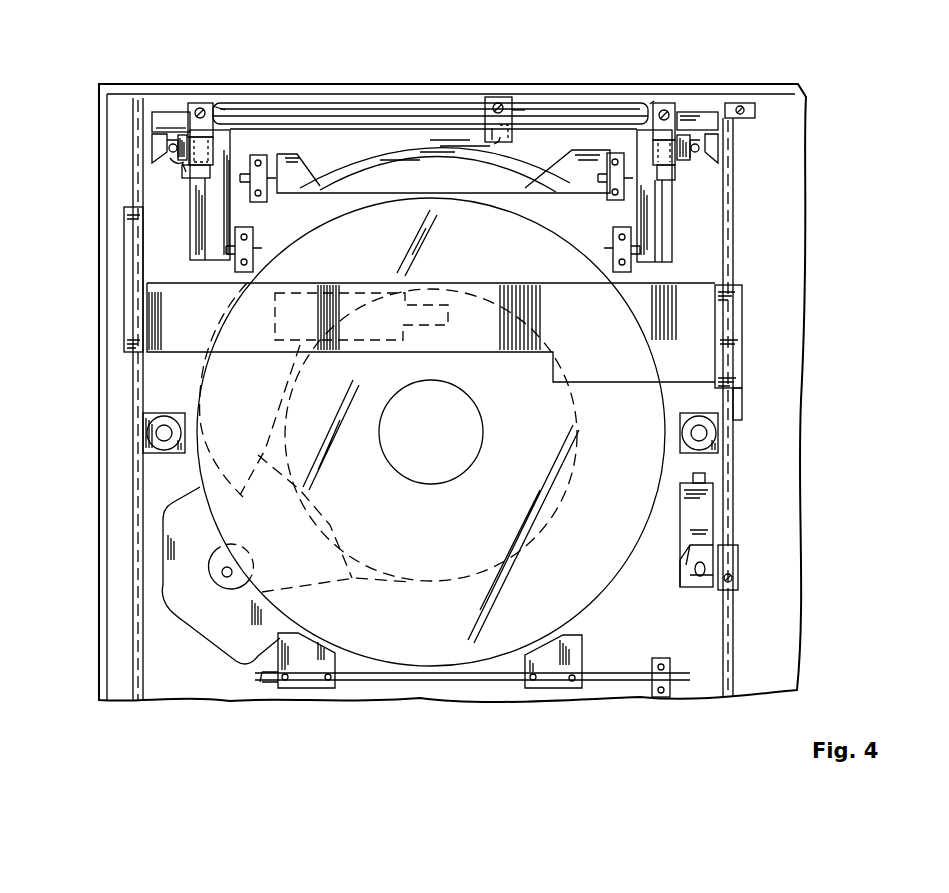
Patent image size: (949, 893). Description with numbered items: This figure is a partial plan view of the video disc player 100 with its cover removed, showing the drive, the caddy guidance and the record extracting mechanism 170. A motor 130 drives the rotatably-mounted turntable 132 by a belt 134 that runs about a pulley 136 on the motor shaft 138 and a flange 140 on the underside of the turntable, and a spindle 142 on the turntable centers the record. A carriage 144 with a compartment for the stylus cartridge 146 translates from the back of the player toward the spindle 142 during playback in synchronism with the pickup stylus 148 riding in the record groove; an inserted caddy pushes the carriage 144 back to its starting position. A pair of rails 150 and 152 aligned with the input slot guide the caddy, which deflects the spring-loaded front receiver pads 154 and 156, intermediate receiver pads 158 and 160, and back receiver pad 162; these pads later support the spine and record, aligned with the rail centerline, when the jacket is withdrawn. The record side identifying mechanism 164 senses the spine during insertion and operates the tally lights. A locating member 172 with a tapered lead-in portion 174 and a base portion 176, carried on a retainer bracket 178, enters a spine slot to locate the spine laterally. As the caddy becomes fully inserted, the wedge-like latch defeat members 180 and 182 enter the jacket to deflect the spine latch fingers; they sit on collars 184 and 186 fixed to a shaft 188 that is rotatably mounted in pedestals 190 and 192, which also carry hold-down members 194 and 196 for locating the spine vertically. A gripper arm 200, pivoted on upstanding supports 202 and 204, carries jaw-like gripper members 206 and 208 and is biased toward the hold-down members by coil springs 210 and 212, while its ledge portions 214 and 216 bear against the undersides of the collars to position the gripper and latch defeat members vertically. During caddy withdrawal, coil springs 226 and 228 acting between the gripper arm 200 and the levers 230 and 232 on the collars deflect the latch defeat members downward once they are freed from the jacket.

The video disc player 100 is at (66, 399).
The motor 130 is at (245, 648).
The turntable 132 is at (602, 594).
The belt 134 is at (411, 580).
The pulley 136 is at (233, 587).
The motor shaft 138 is at (231, 573).
The flange 140 is at (537, 530).
The spindle 142 is at (484, 431).
The carriage 144 is at (556, 283).
The stylus cartridge 146 is at (431, 317).
The pickup stylus 148 is at (450, 324).
The rail 150 is at (133, 628).
The rail 152 is at (729, 661).
The front receiver pad 154 is at (332, 659).
The front receiver pad 156 is at (553, 649).
The intermediate receiver pad 158 is at (165, 430).
The intermediate receiver pad 160 is at (696, 433).
The back receiver pad 162 is at (507, 181).
The record side identifying mechanism 164 is at (706, 517).
The record extracting mechanism 170 is at (126, 72).
The locating member 172 is at (522, 114).
The tapered lead-in portion 174 is at (498, 135).
The base portion 176 is at (491, 104).
The retainer bracket 178 is at (505, 135).
The latch defeat member 180 is at (152, 150).
The latch defeat member 182 is at (716, 152).
The collar 184 is at (172, 117).
The collar 186 is at (716, 112).
The shaft 188 is at (318, 110).
The pedestal 190 is at (203, 102).
The pedestal 192 is at (672, 104).
The hold-down member 194 is at (214, 150).
The hold-down member 196 is at (656, 133).
The gripper arm 200 is at (193, 233).
The upstanding support 202 is at (252, 228).
The upstanding support 204 is at (619, 228).
The gripper member 206 is at (207, 175).
The gripper member 208 is at (667, 172).
The coil spring 210 is at (214, 106).
The coil spring 212 is at (655, 101).
The ledge portion 214 is at (184, 168).
The ledge portion 216 is at (678, 170).
The coil spring 226 is at (168, 146).
The coil spring 228 is at (700, 148).
The lever 230 is at (178, 160).
The lever 232 is at (692, 156).